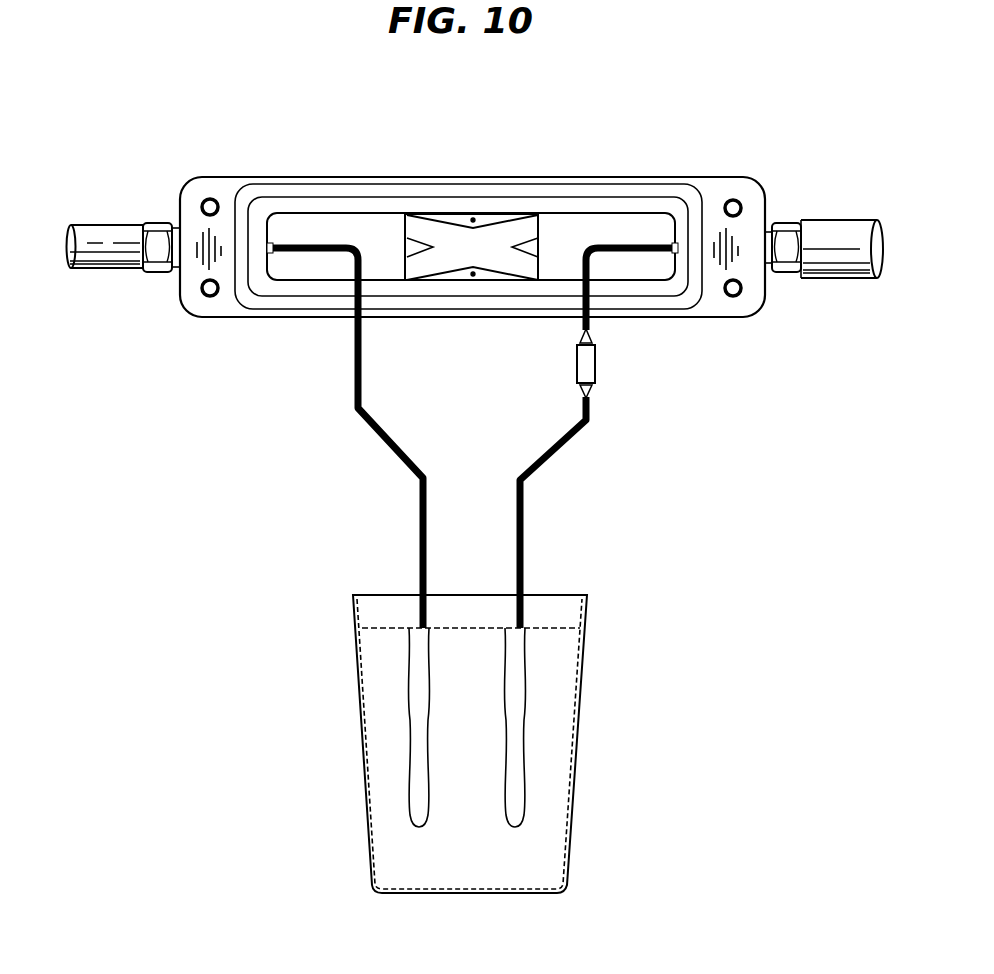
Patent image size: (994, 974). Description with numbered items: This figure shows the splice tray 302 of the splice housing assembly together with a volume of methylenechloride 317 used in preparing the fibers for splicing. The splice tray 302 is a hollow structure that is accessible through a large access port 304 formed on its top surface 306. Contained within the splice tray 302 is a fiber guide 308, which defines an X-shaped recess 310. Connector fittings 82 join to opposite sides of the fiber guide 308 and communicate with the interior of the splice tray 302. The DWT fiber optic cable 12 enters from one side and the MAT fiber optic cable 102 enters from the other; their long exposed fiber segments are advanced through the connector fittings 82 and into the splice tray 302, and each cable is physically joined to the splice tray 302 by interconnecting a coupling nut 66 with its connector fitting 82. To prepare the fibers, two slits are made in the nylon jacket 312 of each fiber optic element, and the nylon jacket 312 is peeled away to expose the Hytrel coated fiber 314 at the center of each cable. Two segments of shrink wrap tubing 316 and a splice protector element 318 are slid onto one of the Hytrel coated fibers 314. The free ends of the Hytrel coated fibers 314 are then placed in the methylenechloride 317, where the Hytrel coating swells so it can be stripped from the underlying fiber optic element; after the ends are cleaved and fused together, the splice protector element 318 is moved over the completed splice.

The DWT fiber optic cable 12 is at (100, 225).
The coupling nut 66 is at (152, 222).
The connector fitting 82 is at (173, 265).
The MAT fiber optic cable 102 is at (833, 220).
The splice tray 302 is at (678, 162).
The access port 304 is at (335, 225).
The top surface 306 is at (228, 307).
The fiber guide 308 is at (490, 213).
The X-shaped recess 310 is at (522, 228).
The nylon jacket 312 is at (278, 197).
The Hytrel coated fiber 314 is at (515, 755).
The shrink wrap tubing 316 is at (580, 390).
The volume of methylenechloride 317 is at (563, 685).
The splice protector element 318 is at (595, 362).